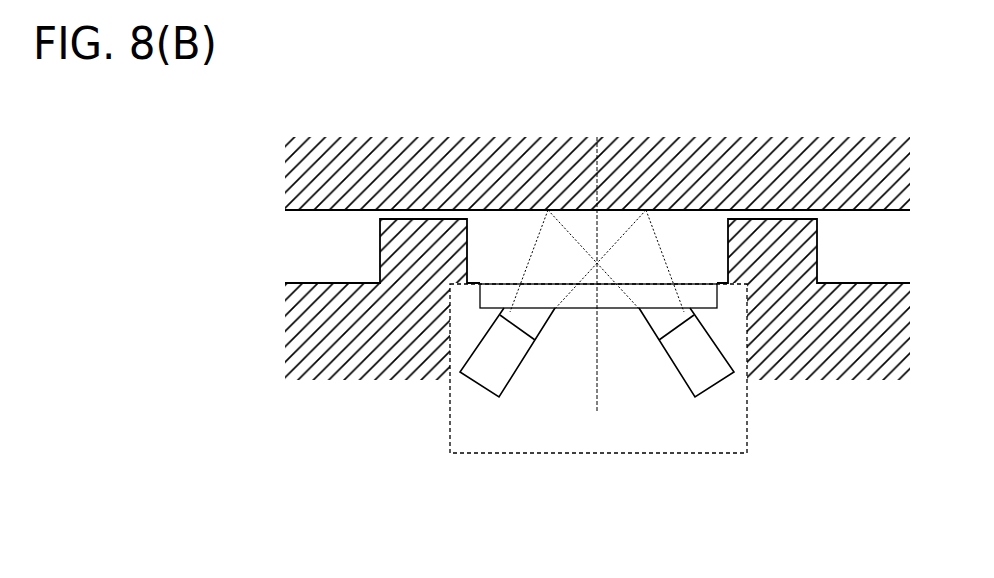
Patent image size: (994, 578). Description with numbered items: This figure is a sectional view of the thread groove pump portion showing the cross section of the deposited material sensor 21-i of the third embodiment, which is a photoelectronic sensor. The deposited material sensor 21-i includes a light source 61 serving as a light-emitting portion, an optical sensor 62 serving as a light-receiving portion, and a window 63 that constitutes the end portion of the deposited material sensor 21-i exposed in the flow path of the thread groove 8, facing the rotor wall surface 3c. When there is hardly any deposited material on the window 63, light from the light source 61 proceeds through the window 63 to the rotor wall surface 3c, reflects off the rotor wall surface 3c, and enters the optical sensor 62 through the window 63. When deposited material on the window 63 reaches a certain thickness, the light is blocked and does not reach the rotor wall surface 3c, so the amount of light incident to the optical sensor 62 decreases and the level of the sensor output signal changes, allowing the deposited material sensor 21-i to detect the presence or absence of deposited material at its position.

The rotor wall surface 3c is at (750, 166).
The thread groove 8 is at (464, 260).
The window 63 is at (717, 303).
The light source 61 is at (476, 379).
The optical sensor 62 is at (717, 387).
The deposited material sensor 21-i is at (488, 455).